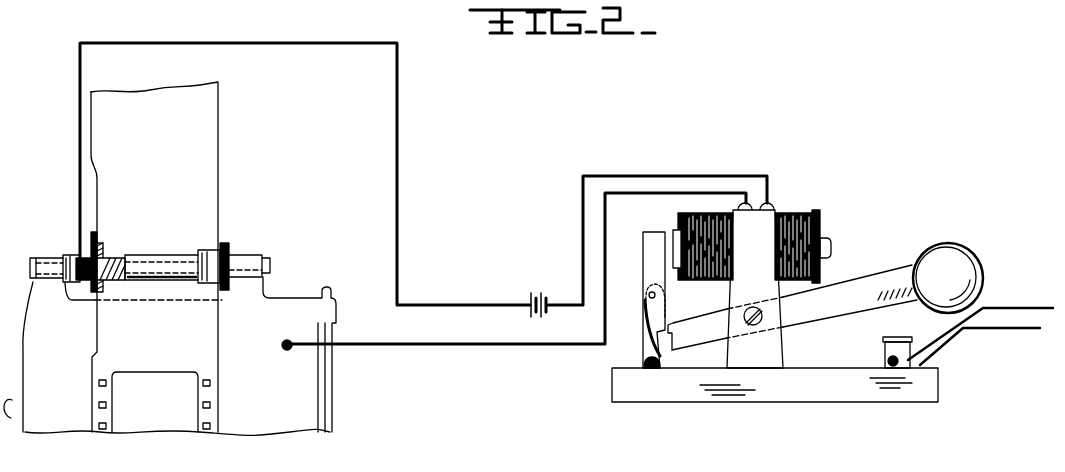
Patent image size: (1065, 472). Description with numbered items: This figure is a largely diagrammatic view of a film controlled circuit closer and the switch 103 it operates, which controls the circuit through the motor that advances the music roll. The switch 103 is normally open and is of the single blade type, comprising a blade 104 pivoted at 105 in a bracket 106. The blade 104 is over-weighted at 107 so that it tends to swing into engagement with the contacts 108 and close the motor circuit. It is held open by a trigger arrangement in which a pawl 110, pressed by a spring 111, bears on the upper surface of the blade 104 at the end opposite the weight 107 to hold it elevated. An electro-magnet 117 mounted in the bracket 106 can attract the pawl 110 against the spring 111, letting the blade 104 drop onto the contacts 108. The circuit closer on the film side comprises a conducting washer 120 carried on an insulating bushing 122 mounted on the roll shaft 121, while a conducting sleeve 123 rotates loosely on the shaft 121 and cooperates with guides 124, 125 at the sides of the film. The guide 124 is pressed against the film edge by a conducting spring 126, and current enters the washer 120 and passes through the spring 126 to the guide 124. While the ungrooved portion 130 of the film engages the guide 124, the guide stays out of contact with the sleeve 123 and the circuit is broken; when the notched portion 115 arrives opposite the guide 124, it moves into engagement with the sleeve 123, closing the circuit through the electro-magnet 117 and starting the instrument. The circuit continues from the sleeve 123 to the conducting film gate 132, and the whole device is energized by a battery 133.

The switch 103 is at (840, 396).
The blade 104 is at (870, 283).
The pivot 105 is at (754, 306).
The bracket 106 is at (776, 345).
The weight 107 is at (962, 265).
The contacts 108 is at (886, 350).
The pawl 110 is at (651, 262).
The spring 111 is at (648, 312).
The notch 115 is at (97, 190).
The electro-magnet 117 is at (800, 216).
The conducting washer 120 is at (94, 240).
The roll shaft 121 is at (30, 268).
The insulating bushing 122 is at (79, 256).
The conducting sleeve 123 is at (157, 254).
The guide 124 is at (99, 246).
The guide 125 is at (226, 243).
The conducting spring 126 is at (88, 290).
The ungrooved portion 130 is at (90, 376).
The film gate 132 is at (270, 307).
The battery 133 is at (536, 292).